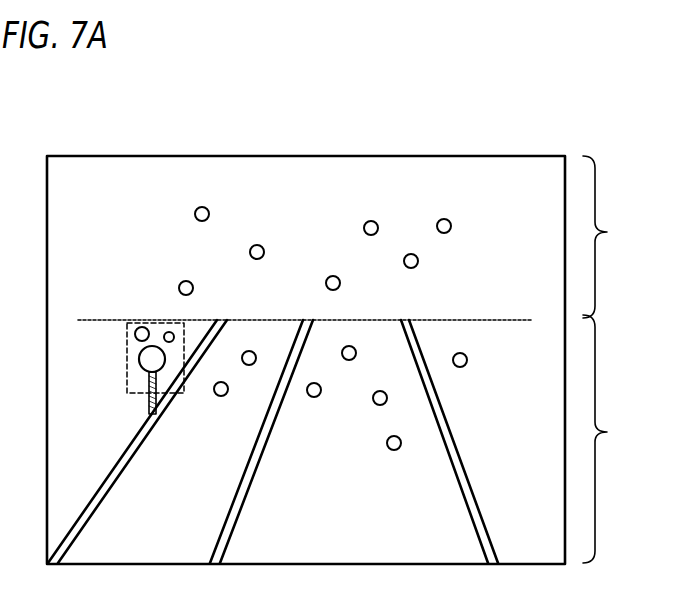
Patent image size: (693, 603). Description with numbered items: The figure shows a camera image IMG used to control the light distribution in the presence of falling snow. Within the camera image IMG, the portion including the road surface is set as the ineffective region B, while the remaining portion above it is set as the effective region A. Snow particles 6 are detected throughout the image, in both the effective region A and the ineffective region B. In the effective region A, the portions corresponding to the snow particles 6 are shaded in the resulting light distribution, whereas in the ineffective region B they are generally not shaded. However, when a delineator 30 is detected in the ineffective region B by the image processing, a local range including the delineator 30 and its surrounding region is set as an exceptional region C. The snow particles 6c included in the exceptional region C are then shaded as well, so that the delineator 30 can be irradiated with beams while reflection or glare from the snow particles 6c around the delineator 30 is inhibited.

The camera image IMG is at (411, 155).
The effective region A is at (611, 237).
The ineffective region B is at (611, 439).
The snow particles 6 is at (327, 276).
The snow particles included in the exceptional region 6c is at (169, 331).
The delineator 30 is at (139, 358).
The exceptional region C is at (127, 380).